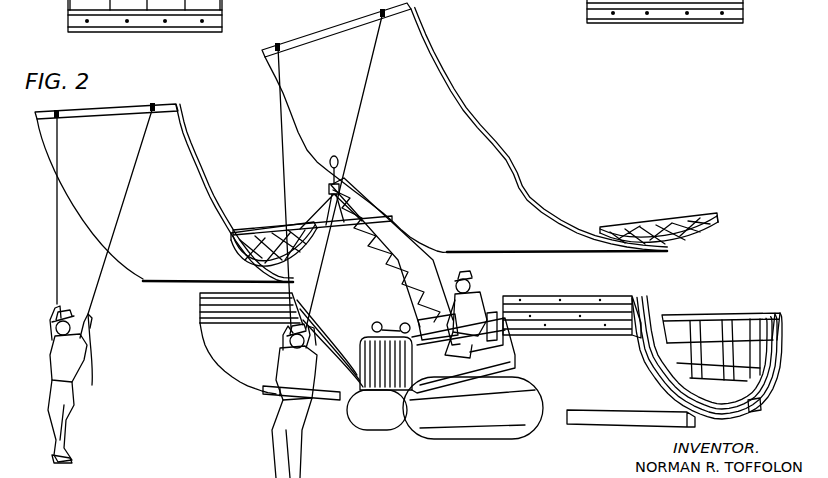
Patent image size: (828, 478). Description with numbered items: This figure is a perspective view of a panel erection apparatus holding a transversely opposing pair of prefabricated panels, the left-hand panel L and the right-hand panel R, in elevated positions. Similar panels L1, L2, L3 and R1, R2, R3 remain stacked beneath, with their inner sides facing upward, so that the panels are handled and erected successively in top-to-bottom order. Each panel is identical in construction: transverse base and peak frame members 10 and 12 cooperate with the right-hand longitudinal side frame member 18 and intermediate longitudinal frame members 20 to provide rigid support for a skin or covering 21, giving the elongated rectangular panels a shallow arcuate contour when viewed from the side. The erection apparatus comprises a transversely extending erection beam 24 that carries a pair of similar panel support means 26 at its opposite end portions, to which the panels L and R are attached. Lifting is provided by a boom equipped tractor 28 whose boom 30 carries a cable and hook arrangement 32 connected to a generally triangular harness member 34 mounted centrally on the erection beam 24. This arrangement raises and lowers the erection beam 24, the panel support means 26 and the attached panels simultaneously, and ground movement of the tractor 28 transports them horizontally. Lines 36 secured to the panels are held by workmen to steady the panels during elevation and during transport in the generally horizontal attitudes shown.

The transverse base frame member 10 is at (222, 20).
The transverse peak frame member 12 is at (690, 282).
The right-hand longitudinal side frame member 18 is at (718, 220).
The intermediate longitudinal frame member 20 is at (721, 314).
The skin or covering 21 is at (351, 142).
The erection beam 24 is at (345, 233).
The panel support means 26 is at (240, 222).
The boom equipped tractor 28 is at (495, 291).
The boom 30 is at (391, 278).
The cable and hook arrangement 32 is at (320, 163).
The triangular harness member 34 is at (313, 202).
The lines 36 is at (128, 188).
The left-hand panel L is at (204, 145).
The similar panel beneath left-hand panel L1 is at (191, 298).
The similar panel beneath left-hand panel L2 is at (191, 313).
The similar panel beneath left-hand panel L3 is at (192, 329).
The right-hand panel R is at (522, 128).
The similar panel beneath right-hand panel R1 is at (639, 300).
The similar panel beneath right-hand panel R2 is at (642, 313).
The similar panel beneath right-hand panel R3 is at (645, 327).